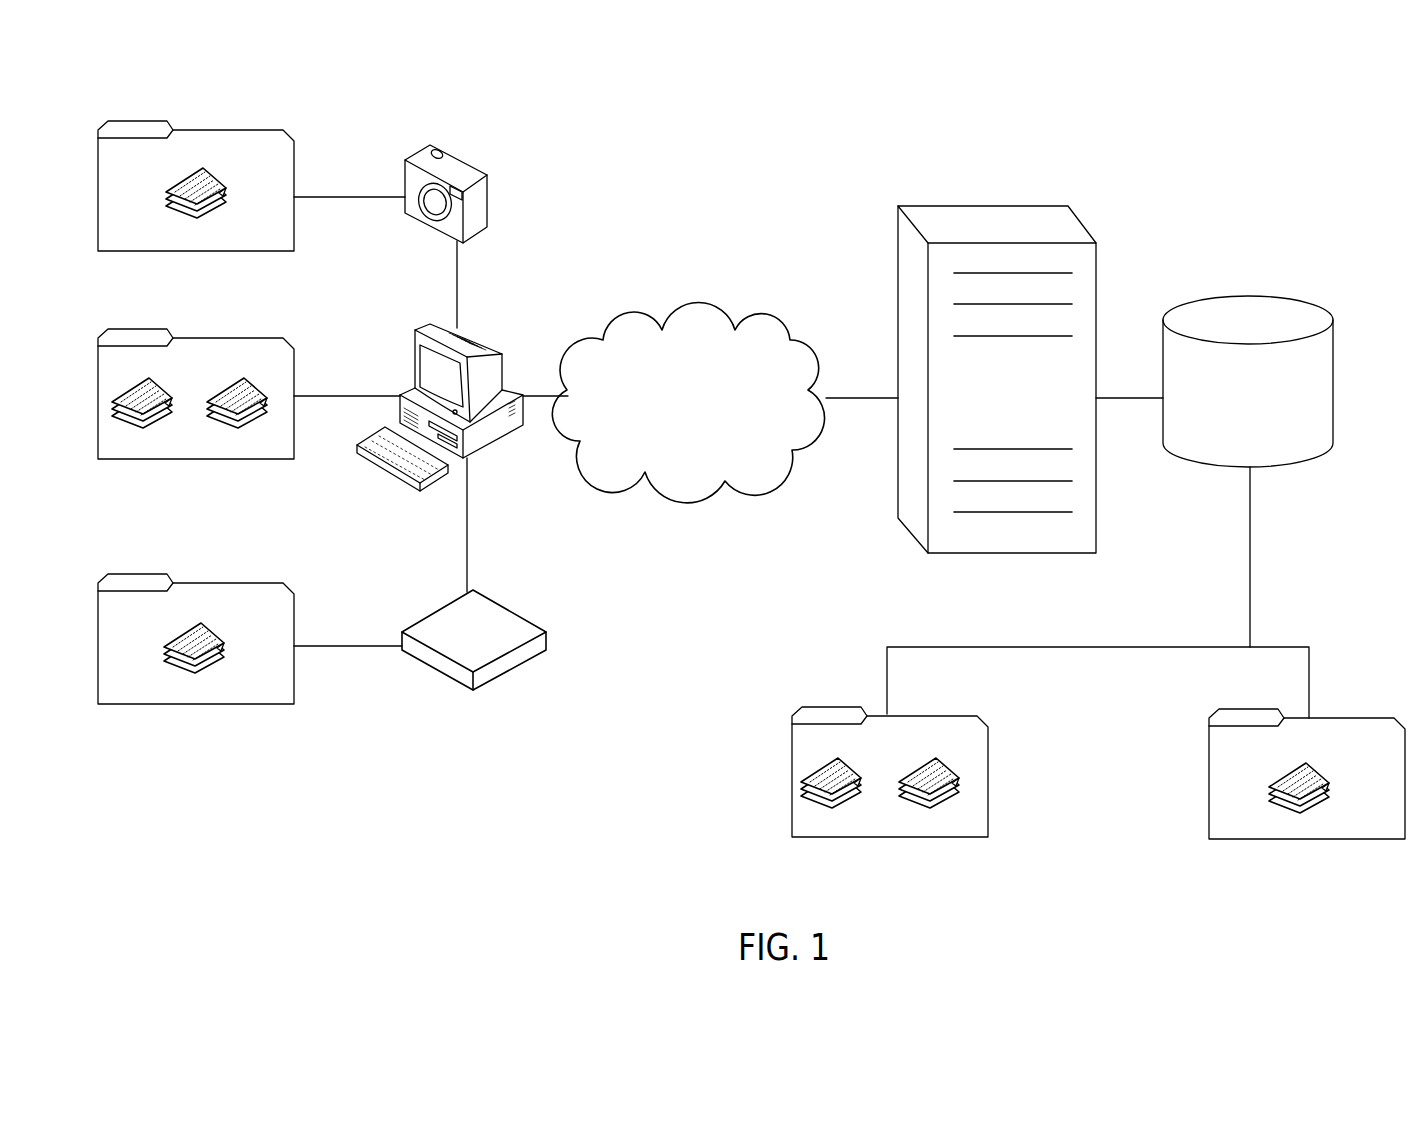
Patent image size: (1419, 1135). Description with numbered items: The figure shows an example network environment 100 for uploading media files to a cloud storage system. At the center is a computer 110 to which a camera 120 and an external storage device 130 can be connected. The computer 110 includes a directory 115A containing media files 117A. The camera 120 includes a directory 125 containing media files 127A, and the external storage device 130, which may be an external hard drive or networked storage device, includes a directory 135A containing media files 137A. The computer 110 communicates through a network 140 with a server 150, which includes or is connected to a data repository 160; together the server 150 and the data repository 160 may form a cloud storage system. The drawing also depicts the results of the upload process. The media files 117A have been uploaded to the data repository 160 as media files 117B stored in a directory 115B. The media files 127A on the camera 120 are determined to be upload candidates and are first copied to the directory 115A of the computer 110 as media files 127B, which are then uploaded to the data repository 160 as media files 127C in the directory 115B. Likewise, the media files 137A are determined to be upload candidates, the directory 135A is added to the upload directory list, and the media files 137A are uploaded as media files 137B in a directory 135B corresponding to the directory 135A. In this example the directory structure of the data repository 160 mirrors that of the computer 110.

The network environment 100 is at (197, 79).
The computer 110 is at (498, 347).
The camera 120 is at (437, 143).
The directory 125 is at (283, 129).
The media files 127A is at (206, 172).
The directory 115A is at (278, 338).
The media files 127B is at (166, 390).
The media files 117A is at (264, 397).
The directory 135A is at (278, 583).
The media files 137A is at (206, 627).
The external storage device 130 is at (470, 692).
The network 140 is at (704, 306).
The server 150 is at (995, 206).
The data repository 160 is at (1245, 296).
The directory 115B is at (969, 714).
The media files 127C is at (859, 768).
The media files 117B is at (957, 775).
The directory 135B is at (1388, 718).
The media files 137B is at (1316, 764).